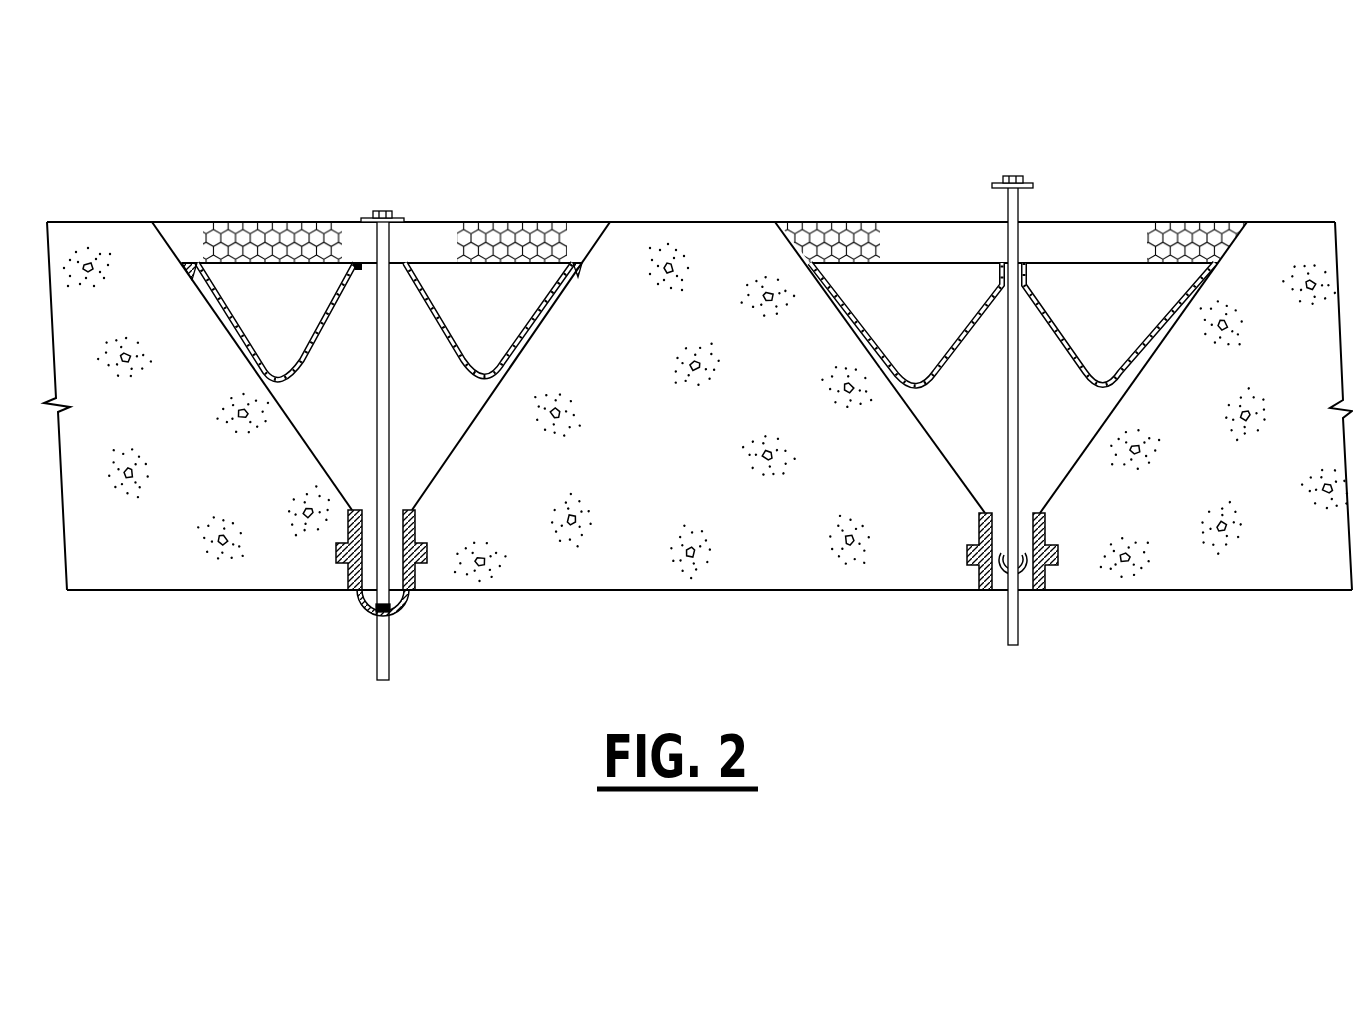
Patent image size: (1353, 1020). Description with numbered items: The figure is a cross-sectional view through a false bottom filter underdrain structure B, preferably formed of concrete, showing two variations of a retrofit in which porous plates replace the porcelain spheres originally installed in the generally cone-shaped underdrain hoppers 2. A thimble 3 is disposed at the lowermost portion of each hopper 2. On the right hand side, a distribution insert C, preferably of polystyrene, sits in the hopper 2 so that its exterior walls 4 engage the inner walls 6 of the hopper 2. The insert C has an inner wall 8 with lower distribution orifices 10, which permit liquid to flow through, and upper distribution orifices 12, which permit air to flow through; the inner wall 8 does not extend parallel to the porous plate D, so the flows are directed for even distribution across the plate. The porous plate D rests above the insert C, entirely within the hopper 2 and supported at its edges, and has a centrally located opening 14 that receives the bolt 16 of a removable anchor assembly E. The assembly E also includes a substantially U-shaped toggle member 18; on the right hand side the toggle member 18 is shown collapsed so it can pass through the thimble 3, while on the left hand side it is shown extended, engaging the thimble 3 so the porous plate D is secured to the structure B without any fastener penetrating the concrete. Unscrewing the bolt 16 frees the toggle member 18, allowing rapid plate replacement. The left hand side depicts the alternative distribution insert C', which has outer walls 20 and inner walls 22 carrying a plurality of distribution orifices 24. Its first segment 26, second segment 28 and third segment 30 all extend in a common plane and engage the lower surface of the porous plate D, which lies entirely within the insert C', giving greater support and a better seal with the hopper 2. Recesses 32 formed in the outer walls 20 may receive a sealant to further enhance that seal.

The underdrain hopper 2 is at (330, 456).
The thimble 3 is at (350, 575).
The exterior wall 4 is at (860, 340).
The inner wall 6 is at (948, 440).
The inner wall 8 is at (970, 332).
The lower distribution orifice 10 is at (948, 355).
The upper distribution orifice 12 is at (970, 310).
The opening 14 is at (1010, 245).
The bolt 16 is at (390, 420).
The toggle member 18 is at (400, 612).
The outer wall 20 is at (235, 345).
The inner wall 22 is at (312, 346).
The distribution orifice 24 is at (327, 299).
The first segment 26 is at (200, 258).
The second segment 28 is at (352, 262).
The third segment 30 is at (573, 258).
The recess 32 is at (188, 268).
The false bottom filter underdrain structure B is at (688, 443).
The distribution insert C is at (1119, 283).
The distribution insert C' is at (385, 280).
The porous plate D is at (498, 218).
The removable anchor assembly E is at (386, 207).